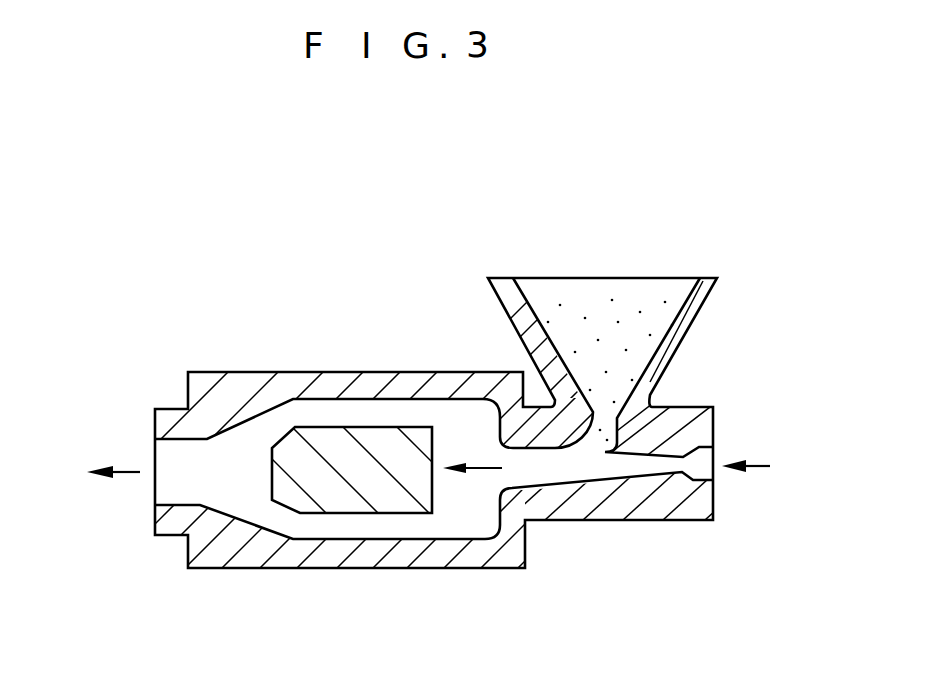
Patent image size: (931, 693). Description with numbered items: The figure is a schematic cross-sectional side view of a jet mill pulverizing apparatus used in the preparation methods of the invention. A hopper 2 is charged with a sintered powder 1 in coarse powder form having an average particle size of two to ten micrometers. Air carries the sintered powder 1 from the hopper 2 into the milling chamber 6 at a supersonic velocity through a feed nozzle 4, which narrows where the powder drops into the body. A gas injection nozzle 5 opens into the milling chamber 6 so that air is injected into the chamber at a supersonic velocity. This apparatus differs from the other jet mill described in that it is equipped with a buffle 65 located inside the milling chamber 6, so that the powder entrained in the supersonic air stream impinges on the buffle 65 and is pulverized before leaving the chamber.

The sintered powder 1 is at (603, 313).
The hopper 2 is at (693, 304).
The feed nozzle 4 is at (652, 403).
The gas injection nozzle 5 is at (718, 472).
The milling chamber 6 is at (472, 510).
The buffle 65 is at (347, 503).